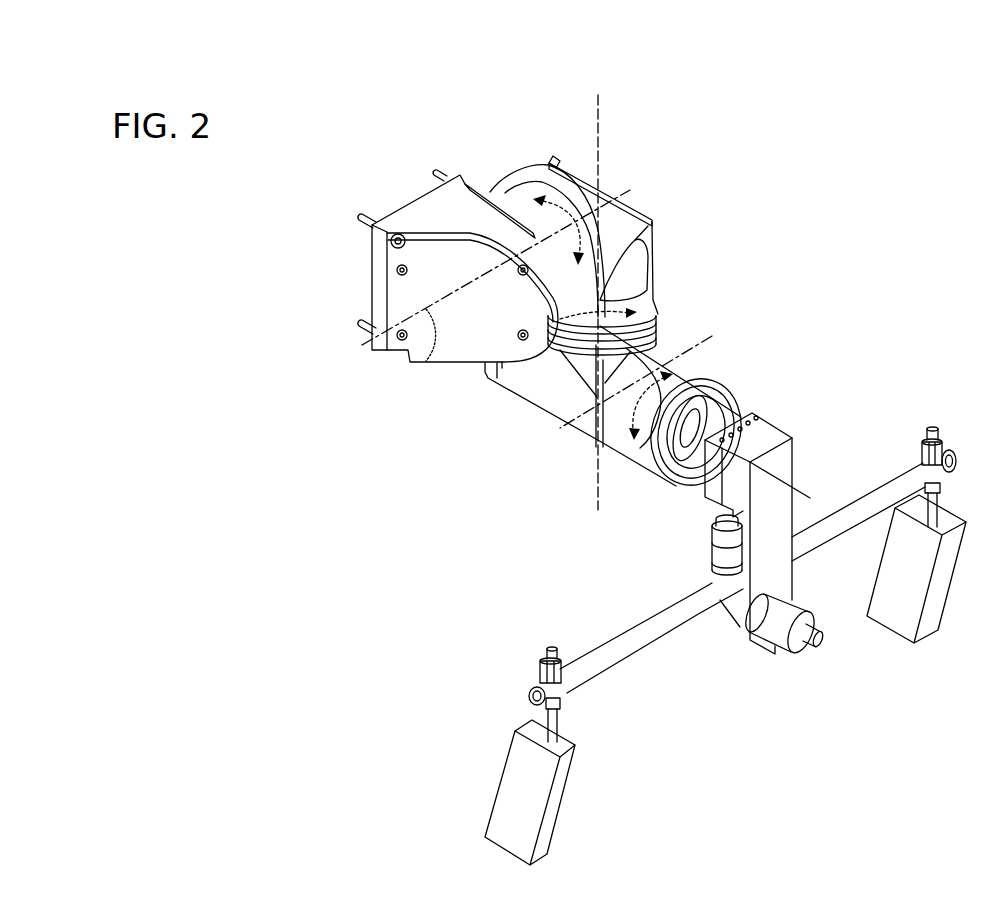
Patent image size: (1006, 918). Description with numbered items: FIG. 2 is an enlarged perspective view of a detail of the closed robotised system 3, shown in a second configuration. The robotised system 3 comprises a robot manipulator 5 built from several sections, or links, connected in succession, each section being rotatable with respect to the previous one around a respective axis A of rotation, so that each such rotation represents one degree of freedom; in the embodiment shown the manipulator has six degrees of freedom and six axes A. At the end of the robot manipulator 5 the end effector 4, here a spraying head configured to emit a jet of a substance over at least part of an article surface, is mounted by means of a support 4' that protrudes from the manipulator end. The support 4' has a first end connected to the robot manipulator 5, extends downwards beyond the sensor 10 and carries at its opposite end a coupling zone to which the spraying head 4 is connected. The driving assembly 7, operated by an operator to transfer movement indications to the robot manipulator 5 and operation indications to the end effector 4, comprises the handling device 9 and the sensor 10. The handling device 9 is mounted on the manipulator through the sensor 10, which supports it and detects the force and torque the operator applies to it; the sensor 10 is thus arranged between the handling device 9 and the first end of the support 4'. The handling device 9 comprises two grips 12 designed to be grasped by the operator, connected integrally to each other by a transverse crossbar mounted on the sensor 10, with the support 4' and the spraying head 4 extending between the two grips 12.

The robotised system 3 is at (467, 131).
The robot manipulator 5 is at (648, 243).
The support 4' is at (772, 527).
The end effector 4 is at (783, 659).
The sensor 10 is at (712, 557).
The handling device 9 is at (545, 629).
The driving assembly 7 is at (856, 403).
The grip 12 is at (508, 795).
The axis of rotation A is at (599, 130).